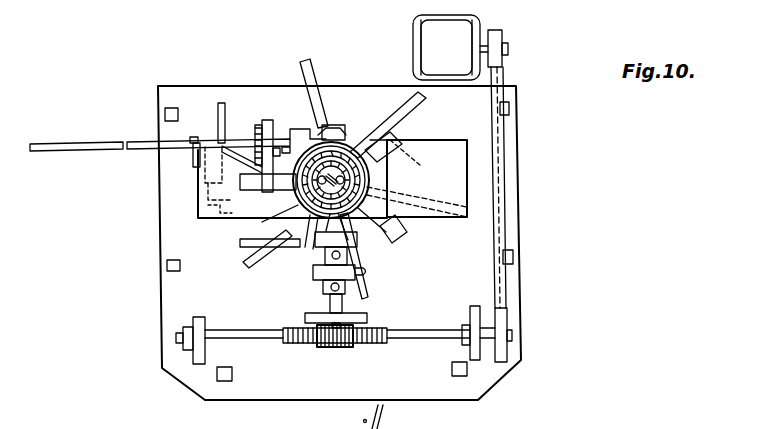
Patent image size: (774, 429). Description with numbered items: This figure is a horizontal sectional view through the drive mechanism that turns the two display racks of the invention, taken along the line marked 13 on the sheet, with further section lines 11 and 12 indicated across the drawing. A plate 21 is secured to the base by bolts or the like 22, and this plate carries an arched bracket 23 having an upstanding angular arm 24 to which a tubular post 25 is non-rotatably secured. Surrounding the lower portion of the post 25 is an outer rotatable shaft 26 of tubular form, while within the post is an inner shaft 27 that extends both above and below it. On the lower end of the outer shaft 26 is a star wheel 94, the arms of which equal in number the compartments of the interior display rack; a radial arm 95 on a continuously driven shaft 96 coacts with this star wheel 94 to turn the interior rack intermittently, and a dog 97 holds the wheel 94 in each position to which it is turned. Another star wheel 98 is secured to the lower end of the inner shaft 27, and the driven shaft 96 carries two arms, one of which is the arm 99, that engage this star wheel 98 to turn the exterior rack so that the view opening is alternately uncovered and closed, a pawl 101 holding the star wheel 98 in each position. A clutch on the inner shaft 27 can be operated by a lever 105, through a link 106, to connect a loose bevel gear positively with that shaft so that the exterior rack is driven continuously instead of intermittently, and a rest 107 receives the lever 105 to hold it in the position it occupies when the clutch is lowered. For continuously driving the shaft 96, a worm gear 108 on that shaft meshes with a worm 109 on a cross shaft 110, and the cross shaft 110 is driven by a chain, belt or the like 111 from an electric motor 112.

The section line 11 is at (222, 303).
The section line 12 is at (143, 182).
The section line 13 is at (333, 105).
The plate 21 is at (510, 358).
The bolts 22 is at (511, 108).
The arched bracket 23 is at (410, 146).
The upstanding angular arm 24 is at (388, 177).
The tubular post 25 is at (334, 164).
The outer rotatable shaft 26 is at (355, 241).
The inner shaft 27 is at (256, 222).
The star wheel 94 is at (400, 234).
The radial arm 95 is at (290, 240).
The continuously driven shaft 96 is at (330, 305).
The dog 97 is at (268, 119).
The star wheel 98 is at (302, 64).
The arm 99 is at (366, 272).
The pawl 101 is at (222, 103).
The lever 105 is at (110, 143).
The link 106 is at (336, 124).
The rest 107 is at (193, 165).
The worm gear 108 is at (354, 339).
The worm 109 is at (318, 345).
The cross shaft 110 is at (416, 328).
The belt 111 is at (494, 272).
The electric motor 112 is at (431, 48).